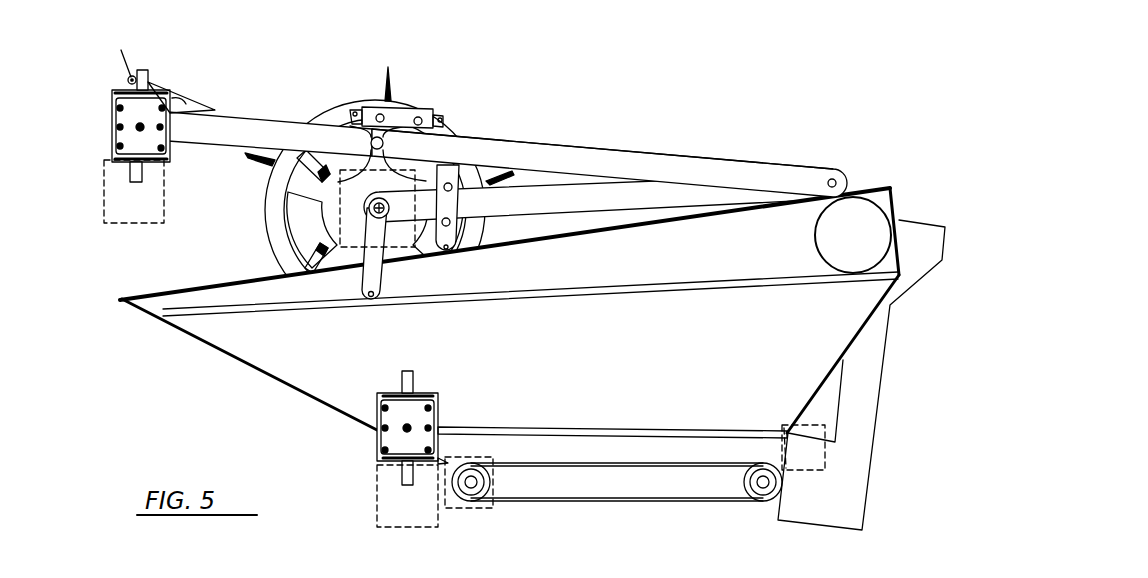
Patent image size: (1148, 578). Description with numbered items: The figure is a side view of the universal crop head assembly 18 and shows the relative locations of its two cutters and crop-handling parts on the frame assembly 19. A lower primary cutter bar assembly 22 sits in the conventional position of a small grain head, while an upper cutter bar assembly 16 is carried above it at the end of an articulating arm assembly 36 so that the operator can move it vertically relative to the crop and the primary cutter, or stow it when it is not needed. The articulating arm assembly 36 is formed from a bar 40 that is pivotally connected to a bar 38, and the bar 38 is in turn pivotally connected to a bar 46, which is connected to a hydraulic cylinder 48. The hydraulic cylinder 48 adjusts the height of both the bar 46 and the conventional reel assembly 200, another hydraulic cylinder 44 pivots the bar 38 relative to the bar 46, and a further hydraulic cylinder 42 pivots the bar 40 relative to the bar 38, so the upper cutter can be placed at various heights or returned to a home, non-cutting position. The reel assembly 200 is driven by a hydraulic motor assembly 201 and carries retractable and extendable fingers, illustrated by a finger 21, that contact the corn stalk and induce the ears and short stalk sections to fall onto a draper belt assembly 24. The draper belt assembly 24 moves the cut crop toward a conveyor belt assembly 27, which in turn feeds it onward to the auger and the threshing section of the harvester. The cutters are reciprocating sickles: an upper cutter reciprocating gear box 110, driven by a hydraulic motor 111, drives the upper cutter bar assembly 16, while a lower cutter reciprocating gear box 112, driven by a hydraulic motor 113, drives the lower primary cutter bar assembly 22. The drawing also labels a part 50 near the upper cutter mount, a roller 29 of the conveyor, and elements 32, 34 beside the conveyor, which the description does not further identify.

The upper cutter bar assembly 16 is at (155, 56).
The universal crop head assembly 18 is at (760, 106).
The frame assembly 19 is at (808, 343).
The finger 21 is at (393, 82).
The lower primary cutter bar assembly 22 is at (368, 509).
The draper belt assembly 24 is at (598, 430).
The conveyor belt assembly 27 is at (613, 501).
The roller 29 is at (470, 508).
The drive 32 is at (826, 455).
The motor 34 is at (785, 448).
The articulating arm assembly 36 is at (517, 150).
The bar 38 is at (586, 142).
The bar 40 is at (248, 124).
The hydraulic cylinder 42 is at (408, 115).
The hydraulic cylinder 44 is at (456, 249).
The bar 46 is at (584, 198).
The hydraulic cylinder 48 is at (381, 276).
The hinge bracket 50 is at (187, 98).
The upper cutter reciprocating gear box 110 is at (128, 117).
The hydraulic motor 111 is at (105, 189).
The lower cutter reciprocating gear box 112 is at (393, 438).
The hydraulic motor 113 is at (377, 491).
The reel assembly 200 is at (332, 103).
The hydraulic motor assembly 201 is at (340, 218).